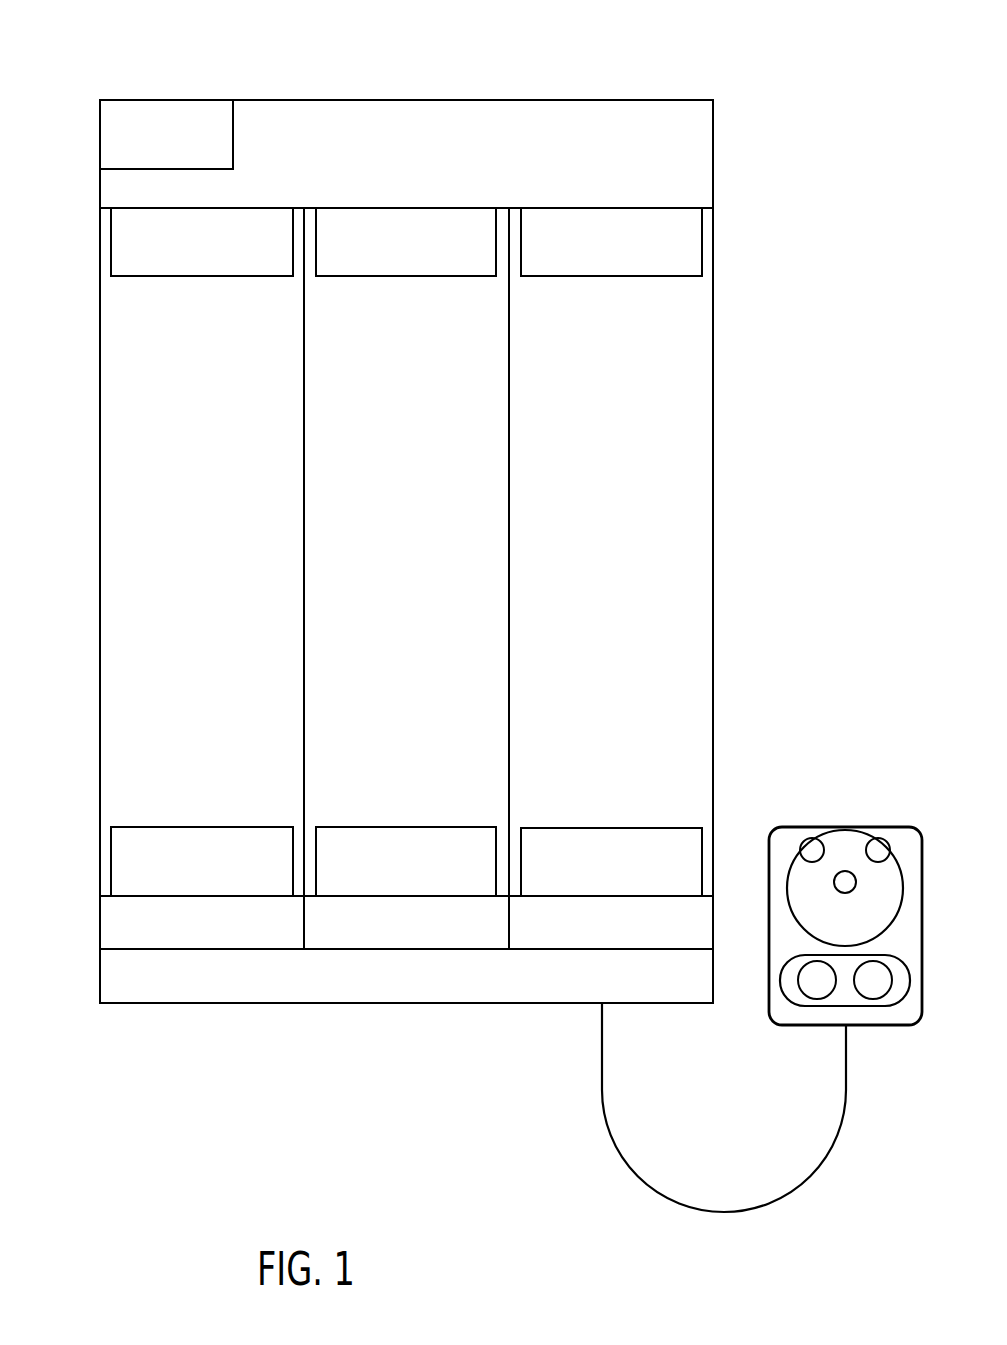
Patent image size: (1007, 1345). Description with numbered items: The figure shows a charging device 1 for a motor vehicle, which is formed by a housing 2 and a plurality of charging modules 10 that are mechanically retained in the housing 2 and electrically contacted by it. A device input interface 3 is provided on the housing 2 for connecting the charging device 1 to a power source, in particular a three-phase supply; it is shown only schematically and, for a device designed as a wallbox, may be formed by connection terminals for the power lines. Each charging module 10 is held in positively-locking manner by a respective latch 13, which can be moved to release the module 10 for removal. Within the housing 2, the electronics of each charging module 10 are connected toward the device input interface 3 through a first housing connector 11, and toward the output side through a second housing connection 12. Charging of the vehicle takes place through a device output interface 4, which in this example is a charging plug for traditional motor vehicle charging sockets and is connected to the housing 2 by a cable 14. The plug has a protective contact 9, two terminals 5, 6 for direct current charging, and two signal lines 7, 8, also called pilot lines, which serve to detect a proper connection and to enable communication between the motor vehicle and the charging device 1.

The charging device 1 is at (826, 87).
The housing 2 is at (392, 118).
The device input interface 3 is at (233, 130).
The device output interface 4 is at (923, 922).
The terminal 5 is at (815, 982).
The terminal 6 is at (873, 982).
The signal line 7 is at (815, 847).
The signal line 8 is at (874, 848).
The protective contact 9 is at (848, 884).
The charging module 10 is at (685, 488).
The first housing connector 11 is at (670, 277).
The second housing connection 12 is at (653, 827).
The latch 13 is at (115, 918).
The cable 14 is at (847, 1098).